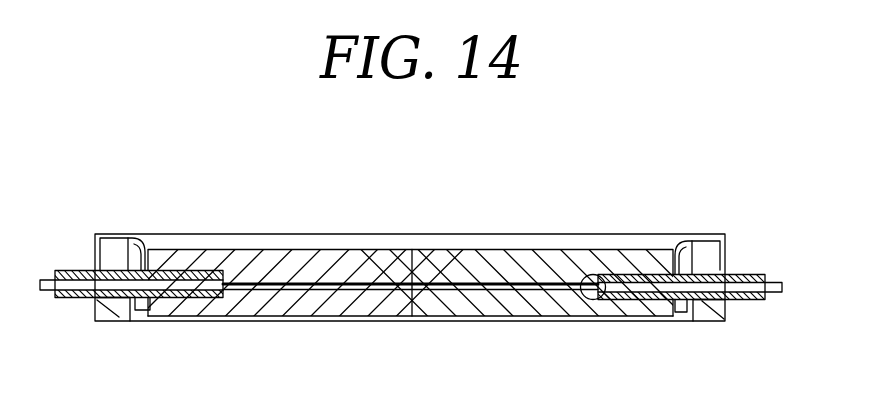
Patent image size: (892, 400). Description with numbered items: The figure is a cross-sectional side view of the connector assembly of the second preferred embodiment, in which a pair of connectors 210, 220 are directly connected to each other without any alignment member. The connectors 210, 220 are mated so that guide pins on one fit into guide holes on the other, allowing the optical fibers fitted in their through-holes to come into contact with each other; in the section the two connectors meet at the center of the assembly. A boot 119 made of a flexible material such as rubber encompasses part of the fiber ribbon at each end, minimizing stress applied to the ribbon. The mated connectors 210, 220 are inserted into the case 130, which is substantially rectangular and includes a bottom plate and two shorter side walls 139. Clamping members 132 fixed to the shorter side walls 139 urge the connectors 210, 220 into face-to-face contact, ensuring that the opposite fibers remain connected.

The case 130 is at (713, 234).
The clamping member 132 is at (145, 233).
The connector 220 is at (253, 249).
The connector 210 is at (572, 249).
The boot 119 is at (77, 299).
The shorter side wall 139 is at (115, 306).